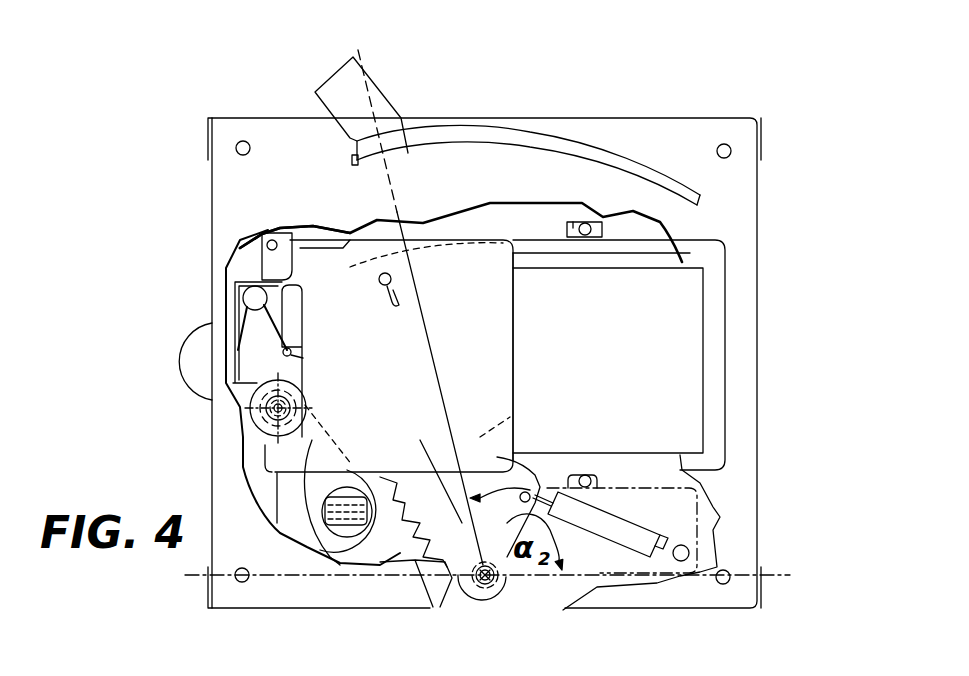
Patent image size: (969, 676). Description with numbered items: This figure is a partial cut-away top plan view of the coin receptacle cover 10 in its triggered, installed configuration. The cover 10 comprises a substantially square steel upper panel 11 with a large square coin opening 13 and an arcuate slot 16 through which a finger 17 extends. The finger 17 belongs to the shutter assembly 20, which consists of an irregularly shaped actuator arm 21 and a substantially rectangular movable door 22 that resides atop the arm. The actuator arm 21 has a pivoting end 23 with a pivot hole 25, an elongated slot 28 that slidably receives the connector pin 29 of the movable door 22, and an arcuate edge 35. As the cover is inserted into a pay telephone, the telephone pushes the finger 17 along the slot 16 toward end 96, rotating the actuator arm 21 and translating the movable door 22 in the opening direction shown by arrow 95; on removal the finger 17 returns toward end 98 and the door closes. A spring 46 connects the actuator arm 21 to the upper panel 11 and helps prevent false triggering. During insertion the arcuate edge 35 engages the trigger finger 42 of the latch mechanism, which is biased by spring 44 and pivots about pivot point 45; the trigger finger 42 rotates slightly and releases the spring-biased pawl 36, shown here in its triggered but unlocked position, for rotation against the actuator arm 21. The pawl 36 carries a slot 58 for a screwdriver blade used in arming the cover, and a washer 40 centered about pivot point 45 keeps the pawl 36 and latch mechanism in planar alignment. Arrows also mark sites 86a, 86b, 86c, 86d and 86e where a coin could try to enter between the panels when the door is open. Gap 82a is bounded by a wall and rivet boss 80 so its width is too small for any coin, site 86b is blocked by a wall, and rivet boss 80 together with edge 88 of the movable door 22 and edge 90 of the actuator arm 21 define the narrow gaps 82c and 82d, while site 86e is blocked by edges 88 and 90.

The cover 10 is at (547, 100).
The upper panel 11 is at (230, 194).
The coin opening 13 is at (703, 360).
The arcuate slot 16 is at (622, 157).
The finger 17 is at (346, 86).
The shutter assembly 20 is at (530, 356).
The actuator arm 21 is at (447, 598).
The movable door 22 is at (372, 253).
The pivoting end 23 is at (490, 590).
The pivot hole 25 is at (487, 597).
The elongated slot 28 is at (395, 312).
The connector pin 29 is at (397, 287).
The arcuate edge 35 is at (305, 327).
The pawl 36 is at (310, 525).
The washer 40 is at (253, 397).
The trigger finger 42 is at (292, 308).
The spring 44 is at (247, 280).
The pivot point 45 is at (278, 408).
The spring 46 is at (608, 540).
The slot 58 is at (345, 525).
The rivet boss 80 is at (573, 222).
The gap 82a is at (637, 240).
The gap 82c is at (537, 238).
The gap 82d is at (552, 474).
The site 86a is at (640, 247).
The site 86b is at (660, 450).
The site 86c is at (535, 248).
The site 86d is at (547, 450).
The site 86e is at (520, 377).
The edge 88 is at (513, 333).
The edge 90 is at (512, 290).
The arrow 95 is at (378, 392).
The end 96 is at (351, 164).
The end 98 is at (707, 201).